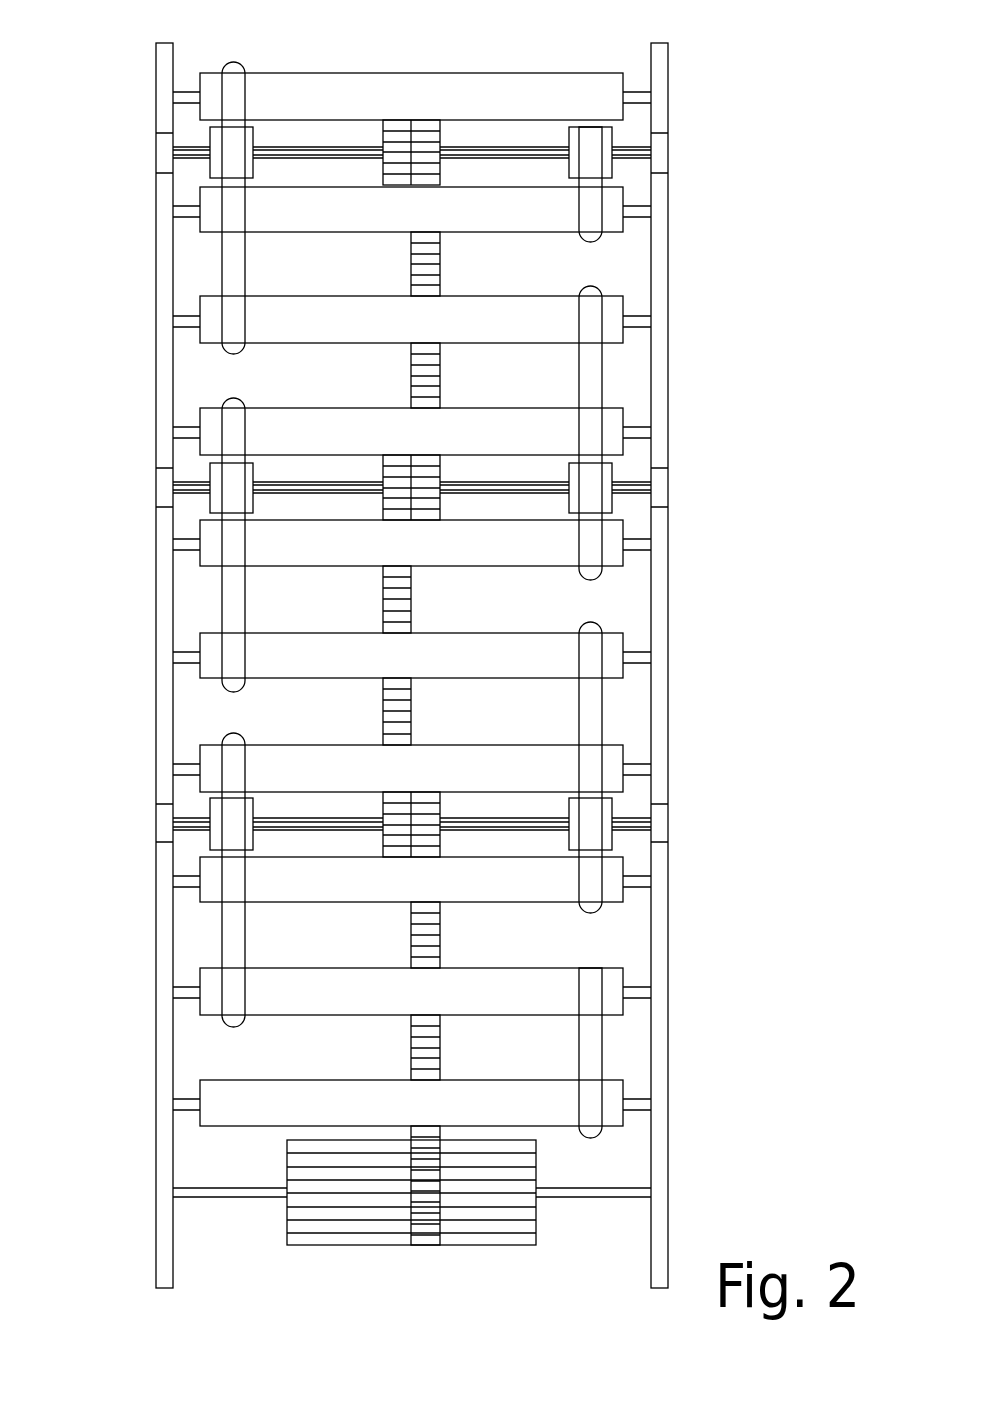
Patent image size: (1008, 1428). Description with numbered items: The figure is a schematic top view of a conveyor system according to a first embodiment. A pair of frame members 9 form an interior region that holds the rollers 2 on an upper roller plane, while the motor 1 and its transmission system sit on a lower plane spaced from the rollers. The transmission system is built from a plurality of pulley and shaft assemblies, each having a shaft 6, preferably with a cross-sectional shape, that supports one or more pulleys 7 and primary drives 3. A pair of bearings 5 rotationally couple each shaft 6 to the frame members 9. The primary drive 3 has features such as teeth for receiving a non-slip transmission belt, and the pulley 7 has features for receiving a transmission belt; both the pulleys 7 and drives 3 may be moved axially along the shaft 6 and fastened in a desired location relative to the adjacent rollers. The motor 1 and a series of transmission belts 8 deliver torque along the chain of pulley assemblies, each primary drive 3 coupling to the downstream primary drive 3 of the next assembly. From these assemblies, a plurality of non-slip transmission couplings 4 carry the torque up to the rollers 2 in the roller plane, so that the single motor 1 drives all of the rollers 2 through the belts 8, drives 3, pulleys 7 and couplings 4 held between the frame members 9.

The motor 1 is at (352, 1246).
The roller 2 is at (630, 227).
The primary drive 3 is at (441, 137).
The transmission coupling 4 is at (577, 380).
The bearing 5 is at (157, 153).
The shaft 6 is at (320, 147).
The pulley 7 is at (207, 169).
The transmission belt 8 is at (445, 938).
The frame member 9 is at (155, 1174).